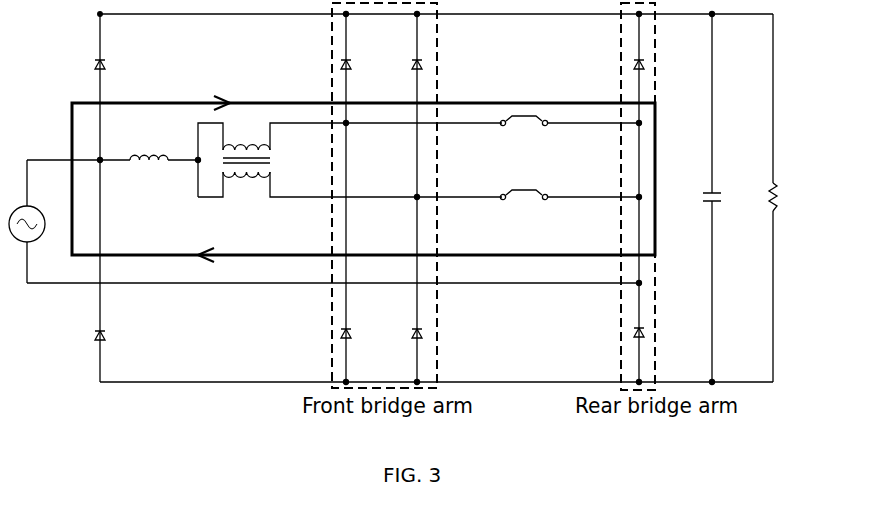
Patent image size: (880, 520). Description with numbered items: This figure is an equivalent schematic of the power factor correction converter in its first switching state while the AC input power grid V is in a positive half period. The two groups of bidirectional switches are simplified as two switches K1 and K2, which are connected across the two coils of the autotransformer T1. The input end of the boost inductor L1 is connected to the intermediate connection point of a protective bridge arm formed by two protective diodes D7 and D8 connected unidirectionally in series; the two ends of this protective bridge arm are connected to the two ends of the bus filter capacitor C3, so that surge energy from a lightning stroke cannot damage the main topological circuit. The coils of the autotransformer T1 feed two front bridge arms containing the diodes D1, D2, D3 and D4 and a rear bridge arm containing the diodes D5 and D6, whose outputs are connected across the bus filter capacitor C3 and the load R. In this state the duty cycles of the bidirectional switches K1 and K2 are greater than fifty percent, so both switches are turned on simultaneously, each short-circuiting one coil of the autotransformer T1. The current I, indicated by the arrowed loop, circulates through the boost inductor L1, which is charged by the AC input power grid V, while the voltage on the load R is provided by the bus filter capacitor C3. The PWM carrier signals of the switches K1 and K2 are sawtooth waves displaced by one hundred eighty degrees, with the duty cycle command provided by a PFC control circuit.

The diode on the front bridge arm D1 is at (320, 197).
The diode on the front bridge arm D2 is at (324, 356).
The diode on the front bridge arm D3 is at (397, 197).
The diode on the front bridge arm D4 is at (397, 356).
The diode on the rear bridge arm D5 is at (654, 197).
The diode on the rear bridge arm D6 is at (654, 355).
The protective diode D7 is at (83, 197).
The protective diode D8 is at (83, 336).
The bidirectional switch K1 is at (492, 103).
The bidirectional switch K2 is at (492, 208).
The boost inductor L1 is at (150, 143).
The autotransformer T1 is at (272, 177).
The bus filter capacitor C3 is at (695, 198).
The load R is at (787, 198).
The AC input power grid V is at (54, 221).
The current loop I is at (363, 168).